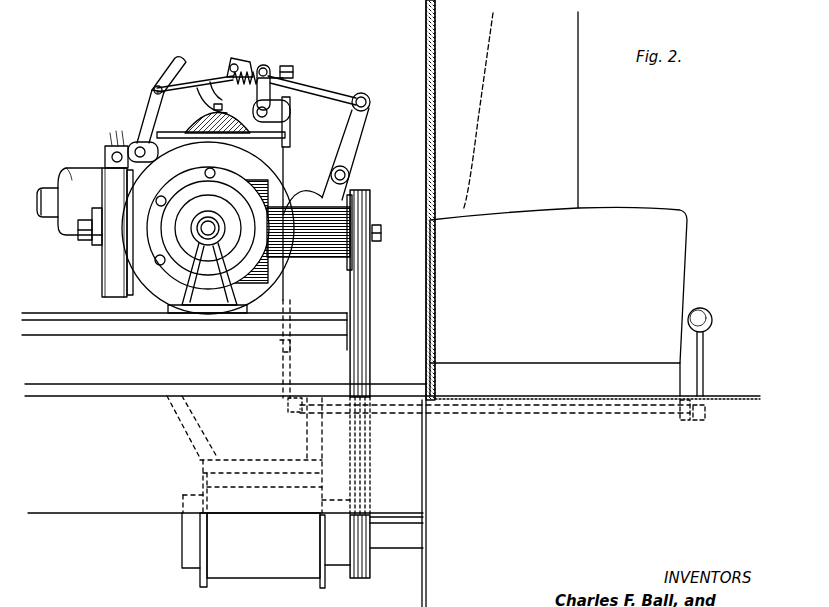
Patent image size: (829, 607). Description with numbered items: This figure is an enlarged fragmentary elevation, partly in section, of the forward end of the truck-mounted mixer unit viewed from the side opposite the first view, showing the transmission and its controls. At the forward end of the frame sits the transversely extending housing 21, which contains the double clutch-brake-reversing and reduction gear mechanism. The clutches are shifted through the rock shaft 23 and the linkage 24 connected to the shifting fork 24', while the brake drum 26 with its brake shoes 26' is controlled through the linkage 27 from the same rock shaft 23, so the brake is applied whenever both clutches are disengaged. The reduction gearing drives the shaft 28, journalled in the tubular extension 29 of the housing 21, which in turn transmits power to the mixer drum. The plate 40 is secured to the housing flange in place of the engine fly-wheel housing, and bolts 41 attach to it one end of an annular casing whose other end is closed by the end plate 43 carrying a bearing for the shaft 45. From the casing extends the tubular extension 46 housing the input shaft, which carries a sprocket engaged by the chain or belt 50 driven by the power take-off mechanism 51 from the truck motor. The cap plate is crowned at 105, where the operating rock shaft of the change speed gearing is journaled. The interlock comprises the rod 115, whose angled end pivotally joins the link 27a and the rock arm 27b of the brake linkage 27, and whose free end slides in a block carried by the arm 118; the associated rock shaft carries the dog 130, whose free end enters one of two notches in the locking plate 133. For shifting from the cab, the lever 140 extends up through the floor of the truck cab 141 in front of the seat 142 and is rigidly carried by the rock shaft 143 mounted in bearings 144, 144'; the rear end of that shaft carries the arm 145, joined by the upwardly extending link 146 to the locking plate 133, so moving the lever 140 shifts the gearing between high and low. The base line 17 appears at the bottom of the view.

The bed plate 17 is at (88, 508).
The housing 21 is at (173, 143).
The rock shaft 23 is at (213, 77).
The linkage 24 is at (319, 78).
The shifting fork 24' is at (359, 154).
The brake drum 26 is at (73, 237).
The brake shoes 26' is at (90, 232).
The linkage 27 is at (187, 58).
The link 27a is at (167, 67).
The rock arm 27b is at (147, 100).
The shaft 28 is at (46, 190).
The tubular extension 29 is at (80, 168).
The plate 40 is at (132, 207).
The bolts 41 is at (161, 197).
The end plate 43 is at (187, 250).
The shaft 45 is at (199, 245).
The tubular extension 46 is at (311, 246).
The chain or belt 50 is at (373, 292).
The power take-off mechanism 51 is at (250, 578).
The crown 105 is at (192, 124).
The rod 115 is at (196, 80).
The arm 118 is at (265, 66).
The dog 130 is at (279, 106).
The locking plate 133 is at (291, 118).
The lever 140 is at (705, 360).
The truck cab 141 is at (432, 78).
The seat 142 is at (686, 266).
The rock shaft 143 is at (515, 414).
The bearings 144 is at (684, 426).
The connector 144' is at (272, 423).
The arm 145 is at (282, 373).
The link 146 is at (287, 160).